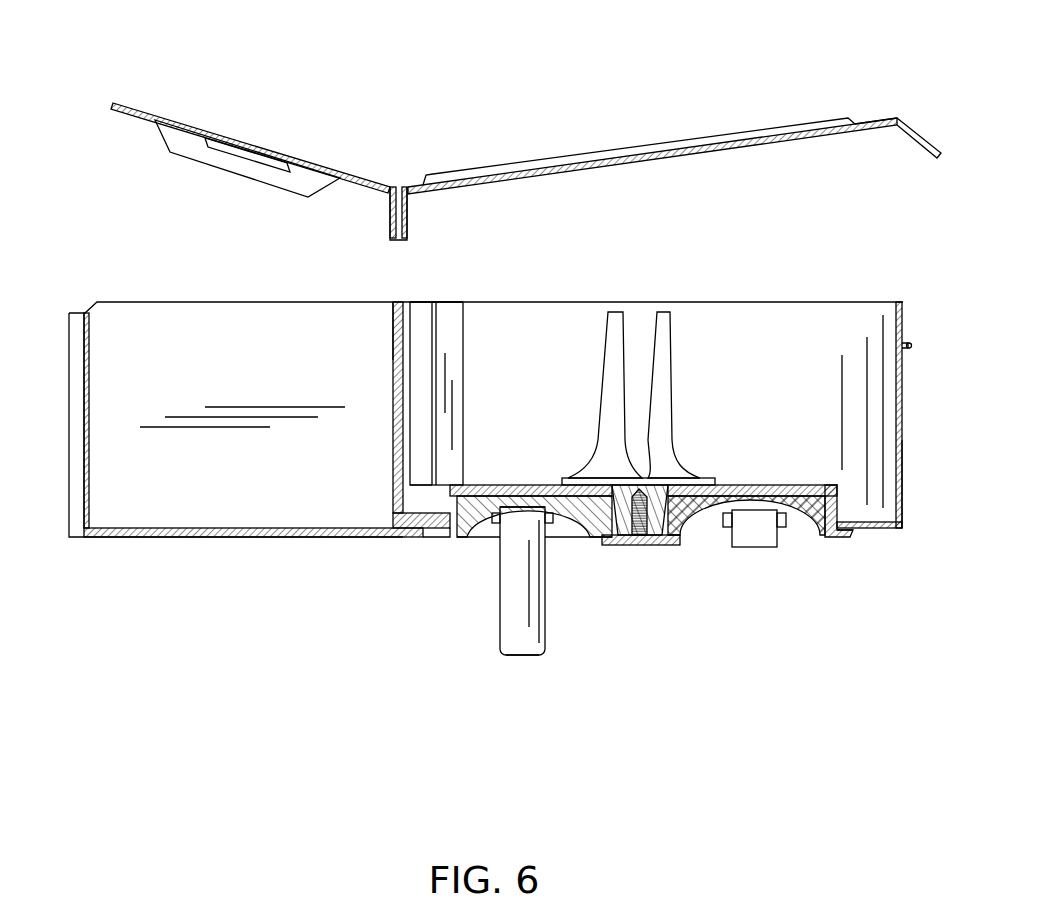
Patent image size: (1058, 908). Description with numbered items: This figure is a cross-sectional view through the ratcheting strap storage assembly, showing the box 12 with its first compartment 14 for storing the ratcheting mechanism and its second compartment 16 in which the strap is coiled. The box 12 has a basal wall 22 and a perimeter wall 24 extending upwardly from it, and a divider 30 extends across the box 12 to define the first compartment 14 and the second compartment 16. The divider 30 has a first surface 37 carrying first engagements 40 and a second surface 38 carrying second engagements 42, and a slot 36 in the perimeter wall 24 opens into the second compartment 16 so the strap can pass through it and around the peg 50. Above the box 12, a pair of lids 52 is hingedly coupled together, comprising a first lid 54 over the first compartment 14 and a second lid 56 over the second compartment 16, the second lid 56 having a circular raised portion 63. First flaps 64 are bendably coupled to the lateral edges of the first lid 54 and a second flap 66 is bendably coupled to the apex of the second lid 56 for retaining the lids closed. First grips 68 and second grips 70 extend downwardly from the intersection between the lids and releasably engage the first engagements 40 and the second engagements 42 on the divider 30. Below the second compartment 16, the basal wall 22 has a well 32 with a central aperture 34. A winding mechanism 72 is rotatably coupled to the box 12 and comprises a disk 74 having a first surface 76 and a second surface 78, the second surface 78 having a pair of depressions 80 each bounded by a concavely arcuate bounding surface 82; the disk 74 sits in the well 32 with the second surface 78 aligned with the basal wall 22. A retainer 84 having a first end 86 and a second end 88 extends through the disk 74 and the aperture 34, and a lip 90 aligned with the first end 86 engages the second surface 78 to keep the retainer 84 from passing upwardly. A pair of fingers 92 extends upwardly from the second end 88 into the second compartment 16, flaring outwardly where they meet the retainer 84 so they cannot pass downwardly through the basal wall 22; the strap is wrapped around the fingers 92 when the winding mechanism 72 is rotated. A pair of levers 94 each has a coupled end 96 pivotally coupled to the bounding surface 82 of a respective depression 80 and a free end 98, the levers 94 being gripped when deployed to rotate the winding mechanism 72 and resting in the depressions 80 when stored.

The box 12 is at (902, 305).
The first compartment 14 is at (128, 330).
The second compartment 16 is at (853, 305).
The basal wall 22 is at (362, 537).
The perimeter wall 24 is at (903, 478).
The divider 30 is at (393, 387).
The well 32 is at (818, 518).
The aperture 34 is at (625, 545).
The slot 36 is at (426, 325).
The first surface 37 is at (393, 433).
The second surface 38 is at (412, 300).
The first engagements 40 is at (393, 347).
The second engagements 42 is at (410, 357).
The peg 50 is at (467, 432).
The lids 52 is at (485, 124).
The first lid 54 is at (135, 103).
The second lid 56 is at (887, 120).
The raised portion 63 is at (660, 143).
The first flaps 64 is at (160, 122).
The second flap 66 is at (923, 150).
The first grips 68 is at (392, 196).
The second grips 70 is at (410, 213).
The winding mechanism 72 is at (692, 352).
The disk 74 is at (716, 548).
The first surface 76 is at (532, 490).
The second surface 78 is at (590, 537).
The depressions 80 is at (478, 548).
The bounding surface 82 is at (558, 535).
The retainer 84 is at (683, 540).
The first end 86 is at (653, 540).
The second end 88 is at (700, 480).
The lip 90 is at (718, 503).
The fingers 92 is at (662, 310).
The levers 94 is at (530, 660).
The coupled end 96 is at (520, 505).
The free end 98 is at (515, 655).